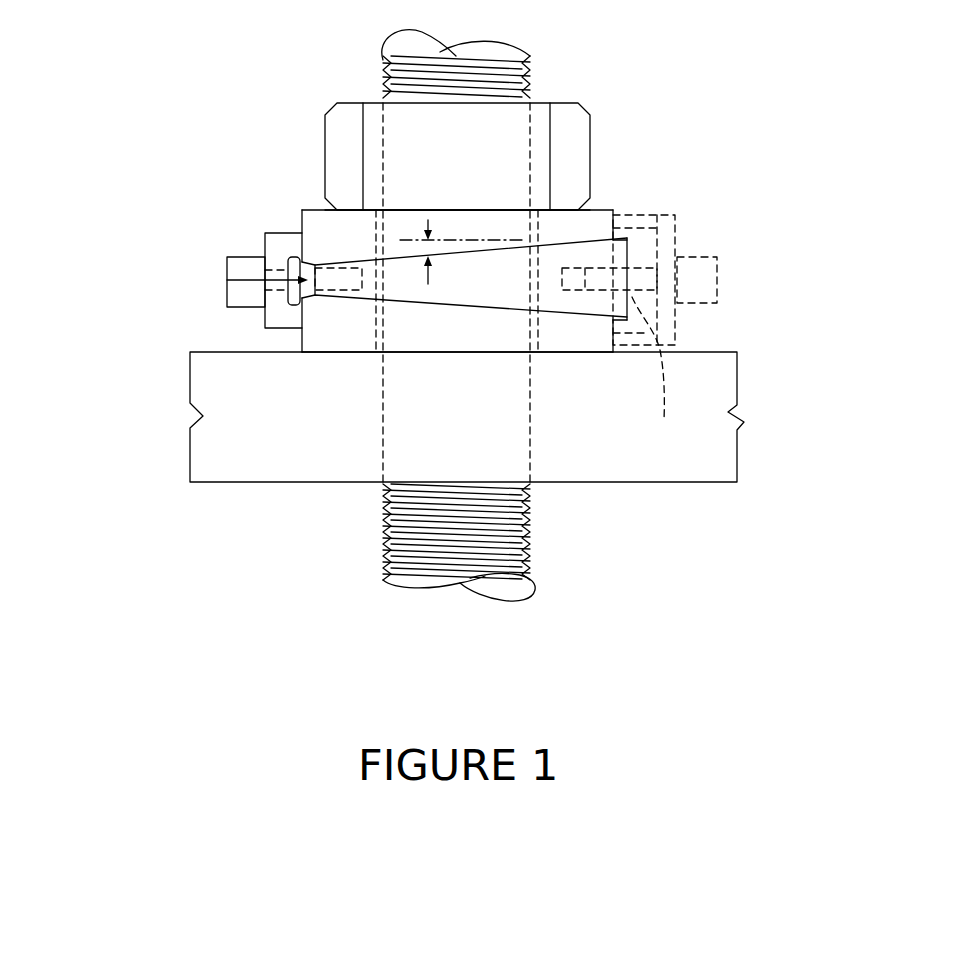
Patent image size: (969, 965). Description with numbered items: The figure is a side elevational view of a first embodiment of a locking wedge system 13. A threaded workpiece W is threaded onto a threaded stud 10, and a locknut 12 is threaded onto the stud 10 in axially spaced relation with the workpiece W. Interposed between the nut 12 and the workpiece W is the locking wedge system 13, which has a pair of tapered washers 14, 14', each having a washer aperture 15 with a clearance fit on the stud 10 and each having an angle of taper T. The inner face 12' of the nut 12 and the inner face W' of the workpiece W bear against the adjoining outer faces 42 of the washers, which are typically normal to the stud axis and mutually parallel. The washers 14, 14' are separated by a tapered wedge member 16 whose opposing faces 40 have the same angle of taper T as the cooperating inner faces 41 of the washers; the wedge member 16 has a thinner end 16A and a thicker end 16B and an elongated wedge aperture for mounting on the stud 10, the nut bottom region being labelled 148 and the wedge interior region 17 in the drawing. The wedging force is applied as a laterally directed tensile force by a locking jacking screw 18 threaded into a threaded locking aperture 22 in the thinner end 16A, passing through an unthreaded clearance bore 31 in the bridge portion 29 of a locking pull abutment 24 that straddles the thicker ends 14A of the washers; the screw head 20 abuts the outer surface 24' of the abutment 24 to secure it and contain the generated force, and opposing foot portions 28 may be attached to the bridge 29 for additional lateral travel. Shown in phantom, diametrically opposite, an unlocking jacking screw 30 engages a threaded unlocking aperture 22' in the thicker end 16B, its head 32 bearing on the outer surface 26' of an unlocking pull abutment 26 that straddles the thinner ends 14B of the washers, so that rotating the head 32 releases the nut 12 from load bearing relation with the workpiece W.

The threaded stud 10 is at (383, 556).
The locknut 12 is at (497, 136).
The inner face of the nut 12' is at (456, 156).
The nut bottom surface 148 is at (560, 210).
The locking wedge system 13 is at (707, 190).
The tapered washer 14 is at (380, 302).
The thicker ends of tapered washers 14A is at (277, 245).
The thinner ends of tapered washers 14B is at (612, 305).
The tapered washer 14' is at (644, 195).
The washer aperture 15 is at (398, 215).
The tapered wedge member 16 is at (627, 243).
The thinner end of the tapered wedge member 16A is at (363, 297).
The thicker end of the tapered wedge member 16B is at (585, 333).
The slot interior 17 is at (530, 275).
The angle of taper T is at (461, 258).
The locking jacking screw 18 is at (266, 246).
The locking jacking screw head 20 is at (237, 287).
The threaded locking aperture 22 is at (227, 261).
The threaded unlocking aperture 22' is at (596, 341).
The locking pull abutment 24 is at (236, 237).
The outer surface of locking pull abutment 24' is at (184, 353).
The unlocking pull abutment 26 is at (664, 316).
The outer surface of unlocking pull abutment 26' is at (755, 354).
The foot portions 28 is at (272, 245).
The bridge portion 29 is at (280, 313).
The unlocking jacking screw 30 is at (727, 318).
The clearance bore 31 is at (262, 250).
The unlocking jacking screw head 32 is at (718, 283).
The opposing faces of the tapered wedge member 40 is at (355, 215).
The inner faces of tapered washers 41 is at (520, 210).
The outer faces of tapered washers 42 is at (335, 232).
The workpiece W is at (467, 449).
The inner face of workpiece W' is at (774, 393).